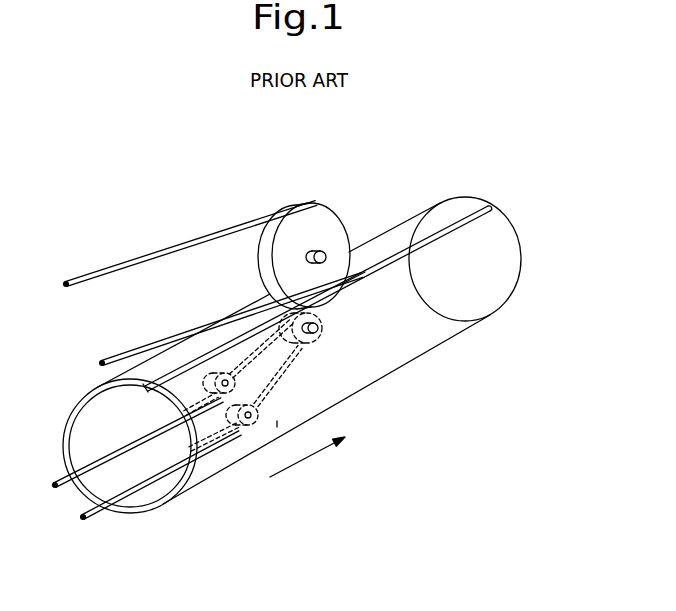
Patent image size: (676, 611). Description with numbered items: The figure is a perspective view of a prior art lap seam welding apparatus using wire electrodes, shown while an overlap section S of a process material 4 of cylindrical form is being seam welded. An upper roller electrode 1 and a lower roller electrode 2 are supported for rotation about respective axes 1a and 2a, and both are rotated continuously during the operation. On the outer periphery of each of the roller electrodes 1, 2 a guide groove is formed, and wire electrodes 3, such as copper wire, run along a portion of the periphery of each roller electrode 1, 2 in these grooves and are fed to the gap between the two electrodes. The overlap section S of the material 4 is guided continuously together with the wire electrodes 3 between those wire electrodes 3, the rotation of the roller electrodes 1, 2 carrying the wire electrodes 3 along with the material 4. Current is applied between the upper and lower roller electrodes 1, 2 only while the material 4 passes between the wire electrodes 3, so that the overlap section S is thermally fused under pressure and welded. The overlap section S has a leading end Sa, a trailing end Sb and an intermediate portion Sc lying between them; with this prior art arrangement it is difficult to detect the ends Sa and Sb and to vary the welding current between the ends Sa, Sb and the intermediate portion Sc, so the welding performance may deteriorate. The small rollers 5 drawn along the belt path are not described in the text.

The upper roller electrode 1 is at (284, 237).
The axis of upper roller electrode 1a is at (311, 262).
The lower roller electrode 2 is at (296, 382).
The axis of lower roller electrode 2a is at (325, 331).
The wire electrodes 3 is at (158, 254).
The process material 4 is at (480, 303).
The belt rollers 5 is at (216, 373).
The overlap section S is at (308, 339).
The leading end of overlap section Sa is at (485, 207).
The trailing end of overlap section Sb is at (138, 381).
The intermediate portion of overlap section Sc is at (353, 283).